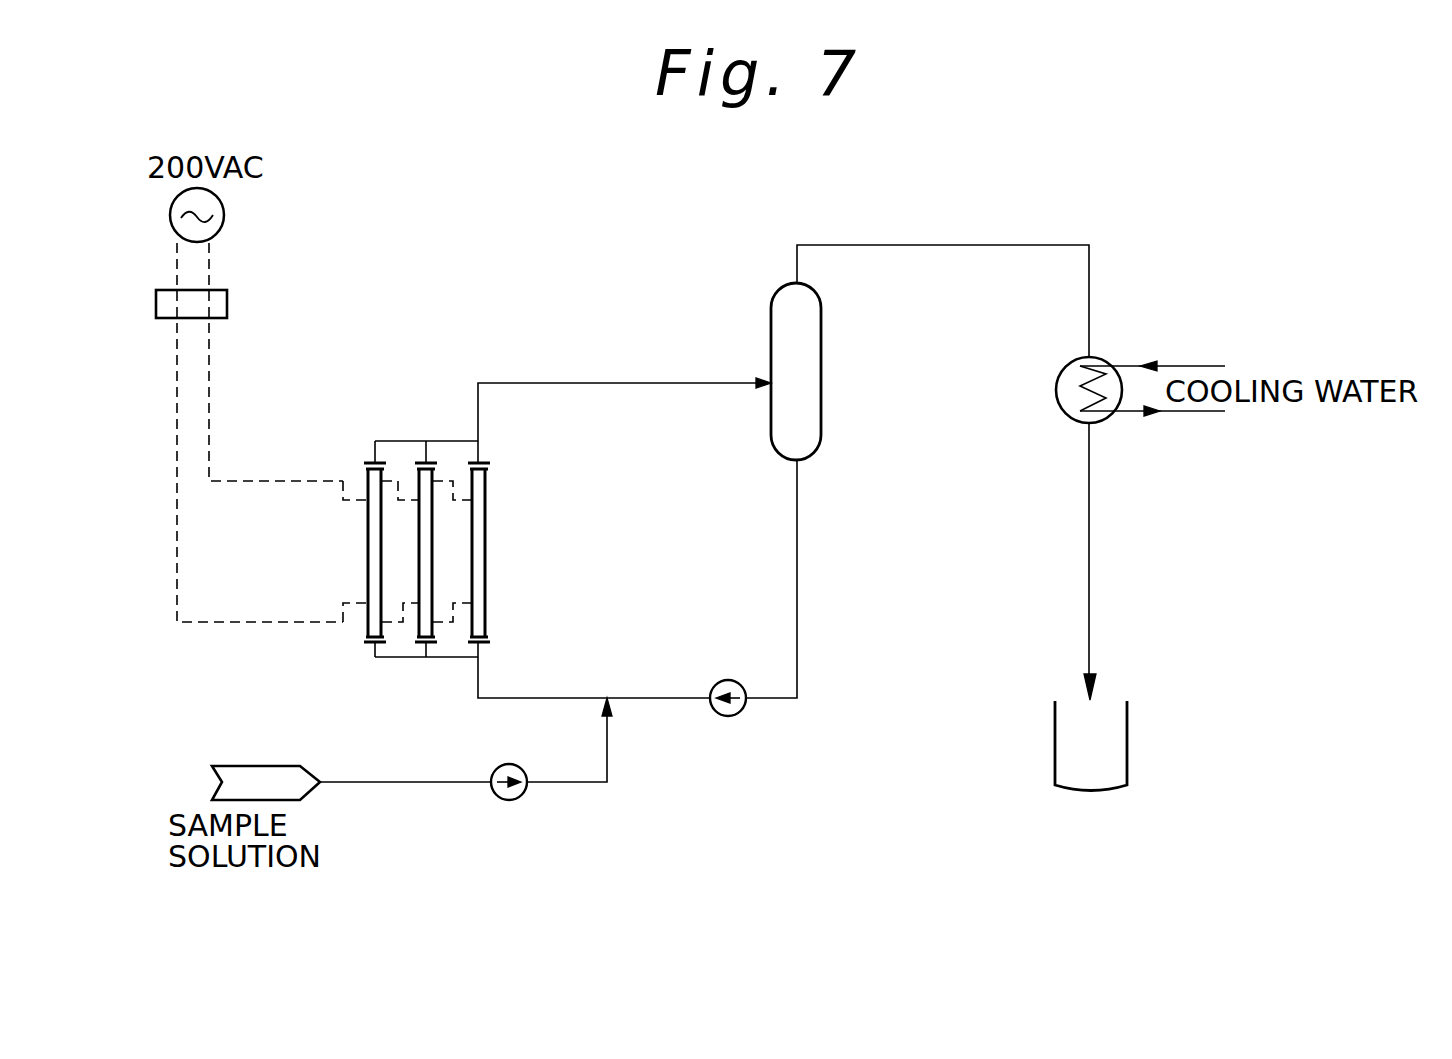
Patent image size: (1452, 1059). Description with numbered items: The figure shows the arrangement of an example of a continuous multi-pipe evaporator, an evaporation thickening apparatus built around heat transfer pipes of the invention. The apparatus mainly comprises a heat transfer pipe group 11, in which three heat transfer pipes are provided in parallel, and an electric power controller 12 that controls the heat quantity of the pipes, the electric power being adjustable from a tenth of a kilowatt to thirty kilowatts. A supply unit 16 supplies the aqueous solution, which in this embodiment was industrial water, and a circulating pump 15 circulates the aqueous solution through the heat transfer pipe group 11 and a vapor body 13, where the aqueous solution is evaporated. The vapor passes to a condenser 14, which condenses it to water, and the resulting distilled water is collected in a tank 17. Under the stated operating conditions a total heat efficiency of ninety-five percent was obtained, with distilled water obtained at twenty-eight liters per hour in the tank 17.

The heat transfer pipe group 11 is at (488, 542).
The electric power controller 12 is at (227, 300).
The vapor body 13 is at (822, 362).
The condenser 14 is at (1060, 404).
The circulating pump 15 is at (728, 680).
The supply unit 16 is at (509, 800).
The tank 17 is at (1128, 726).